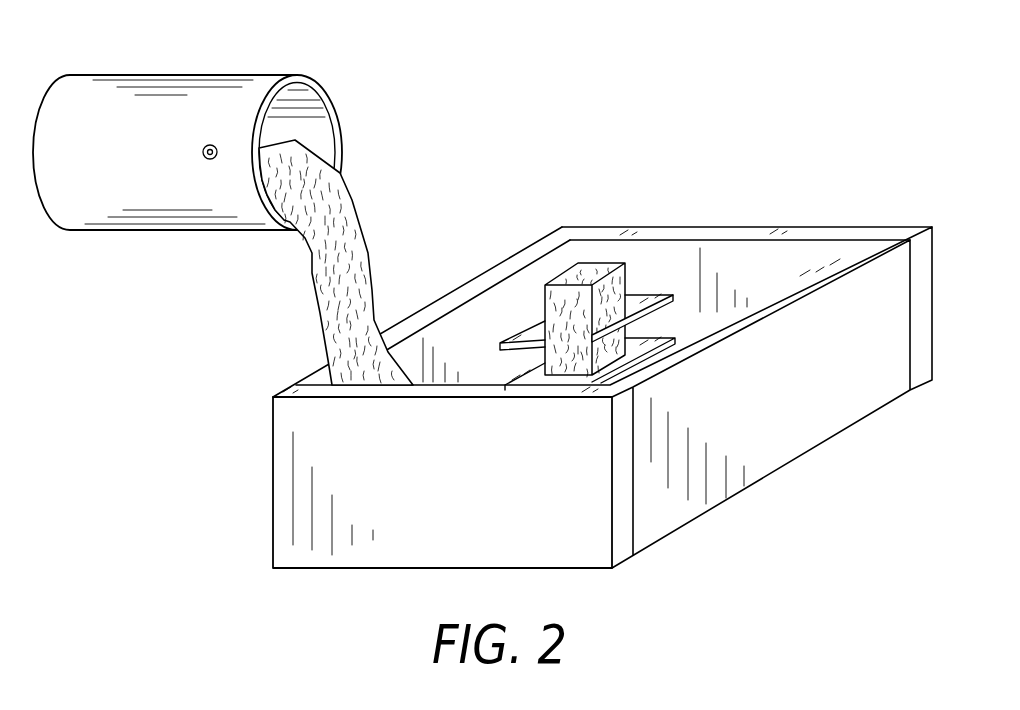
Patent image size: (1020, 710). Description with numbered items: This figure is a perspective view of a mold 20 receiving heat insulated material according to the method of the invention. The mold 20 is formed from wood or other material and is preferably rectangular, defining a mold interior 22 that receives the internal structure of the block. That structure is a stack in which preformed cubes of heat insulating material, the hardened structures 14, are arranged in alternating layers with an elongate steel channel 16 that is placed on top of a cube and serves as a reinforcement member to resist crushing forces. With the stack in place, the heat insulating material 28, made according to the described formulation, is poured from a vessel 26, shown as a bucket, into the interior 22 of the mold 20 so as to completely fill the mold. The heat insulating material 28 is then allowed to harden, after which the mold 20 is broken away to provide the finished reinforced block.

The hardened structures 14 is at (587, 268).
The steel channel 16 is at (653, 297).
The mold 20 is at (298, 422).
The mold interior 22 is at (490, 317).
The vessel 26 is at (110, 88).
The heat insulating material 28 is at (337, 203).